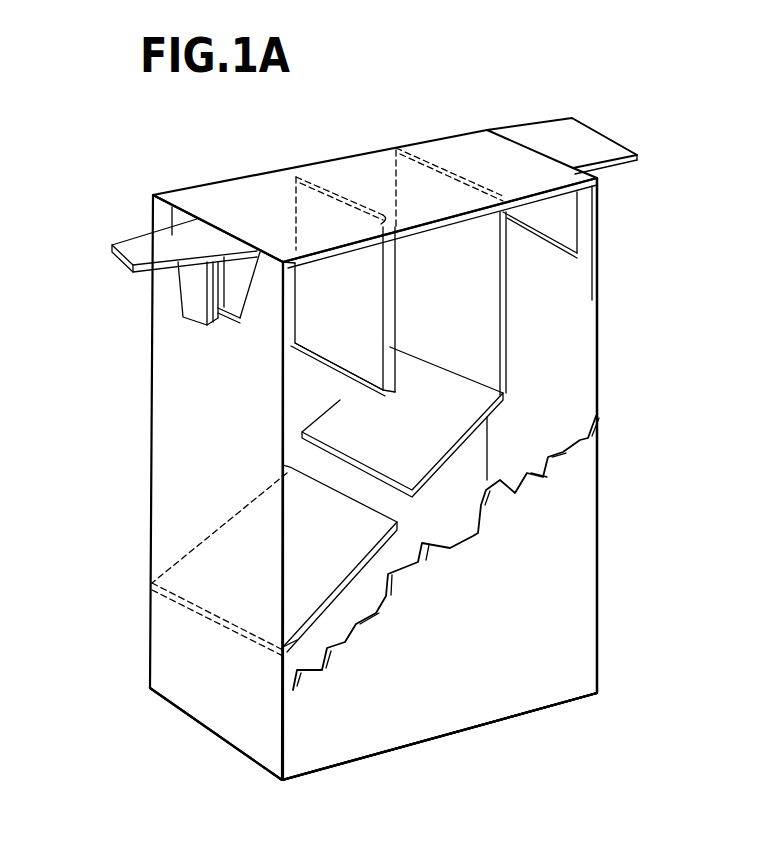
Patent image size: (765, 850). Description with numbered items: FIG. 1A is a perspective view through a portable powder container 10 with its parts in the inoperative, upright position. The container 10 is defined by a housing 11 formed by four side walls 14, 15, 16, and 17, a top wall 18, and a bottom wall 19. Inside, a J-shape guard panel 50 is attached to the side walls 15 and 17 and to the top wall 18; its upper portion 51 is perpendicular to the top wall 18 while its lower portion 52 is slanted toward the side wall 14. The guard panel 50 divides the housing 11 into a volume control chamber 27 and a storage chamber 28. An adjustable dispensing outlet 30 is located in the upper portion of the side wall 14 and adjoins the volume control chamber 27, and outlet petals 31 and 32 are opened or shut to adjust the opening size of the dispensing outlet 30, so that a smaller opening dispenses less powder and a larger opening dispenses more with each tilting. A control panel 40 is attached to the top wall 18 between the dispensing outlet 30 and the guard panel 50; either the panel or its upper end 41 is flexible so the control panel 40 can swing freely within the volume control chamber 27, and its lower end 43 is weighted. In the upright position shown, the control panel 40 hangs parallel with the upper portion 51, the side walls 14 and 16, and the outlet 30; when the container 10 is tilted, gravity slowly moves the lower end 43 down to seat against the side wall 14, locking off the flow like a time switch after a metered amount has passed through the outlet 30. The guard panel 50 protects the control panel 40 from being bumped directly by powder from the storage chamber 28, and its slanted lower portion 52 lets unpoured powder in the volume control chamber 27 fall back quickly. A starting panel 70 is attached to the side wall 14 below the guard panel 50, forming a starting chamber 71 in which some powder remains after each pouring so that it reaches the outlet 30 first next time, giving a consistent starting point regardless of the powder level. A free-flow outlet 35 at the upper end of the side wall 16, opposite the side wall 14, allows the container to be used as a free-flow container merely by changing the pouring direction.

The portable powder container 10 is at (618, 611).
The housing 11 is at (135, 630).
The side wall 14 is at (190, 693).
The side wall 15 is at (573, 548).
The side wall 16 is at (570, 346).
The side wall 17 is at (230, 178).
The top wall 18 is at (257, 195).
The bottom wall 19 is at (340, 768).
The volume control chamber 27 is at (320, 397).
The storage chamber 28 is at (457, 517).
The adjustable dispensing outlet 30 is at (235, 320).
The outlet petal 31 is at (143, 240).
The outlet petal 32 is at (177, 308).
The free-flow outlet 35 is at (567, 222).
The control panel 40 is at (310, 313).
The upper end of control panel 41 is at (332, 215).
The lower end of control panel 43 is at (327, 352).
The guard panel 50 is at (483, 288).
The upper portion of guard panel 51 is at (432, 182).
The lower portion of guard panel 52 is at (450, 422).
The starting panel 70 is at (283, 665).
The starting chamber 71 is at (207, 563).